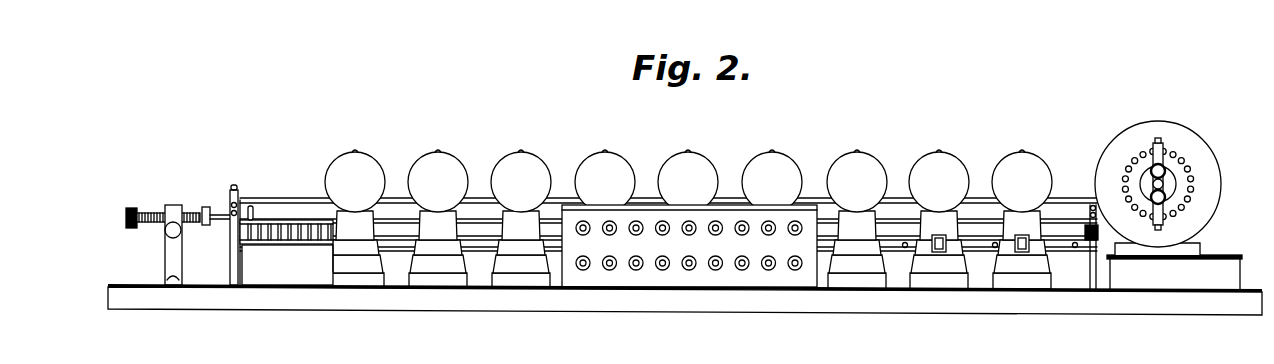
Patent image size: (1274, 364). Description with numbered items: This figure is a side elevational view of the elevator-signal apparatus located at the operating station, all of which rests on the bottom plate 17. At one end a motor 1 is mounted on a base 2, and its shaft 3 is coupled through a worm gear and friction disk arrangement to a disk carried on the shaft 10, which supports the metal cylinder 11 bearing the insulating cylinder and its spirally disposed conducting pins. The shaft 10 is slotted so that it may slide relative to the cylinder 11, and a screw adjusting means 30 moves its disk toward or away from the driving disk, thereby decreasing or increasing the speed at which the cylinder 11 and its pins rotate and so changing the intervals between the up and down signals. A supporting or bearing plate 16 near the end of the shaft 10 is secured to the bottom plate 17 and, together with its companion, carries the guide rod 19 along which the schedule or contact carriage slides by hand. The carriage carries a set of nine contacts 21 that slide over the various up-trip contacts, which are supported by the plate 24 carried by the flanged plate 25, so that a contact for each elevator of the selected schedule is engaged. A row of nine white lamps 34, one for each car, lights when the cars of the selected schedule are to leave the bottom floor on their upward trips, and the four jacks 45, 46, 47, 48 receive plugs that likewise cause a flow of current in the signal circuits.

The motor 1 is at (1203, 145).
The base 2 is at (1224, 256).
The shaft 3 is at (1163, 184).
The shaft 10 is at (232, 211).
The metal cylinder 11 is at (1100, 260).
The supporting or bearing plate 16 is at (231, 238).
The bottom plate 17 is at (146, 284).
The guide rod 19 is at (228, 268).
The set of contacts 21 is at (290, 232).
The plate 24 is at (268, 248).
The flanged plate 25 is at (314, 261).
The screw adjusting means 30 is at (151, 211).
The white lamp 34 is at (367, 170).
The jack 45 is at (689, 246).
The jack 46 is at (689, 245).
The jack 47 is at (689, 245).
The jack 48 is at (688, 240).